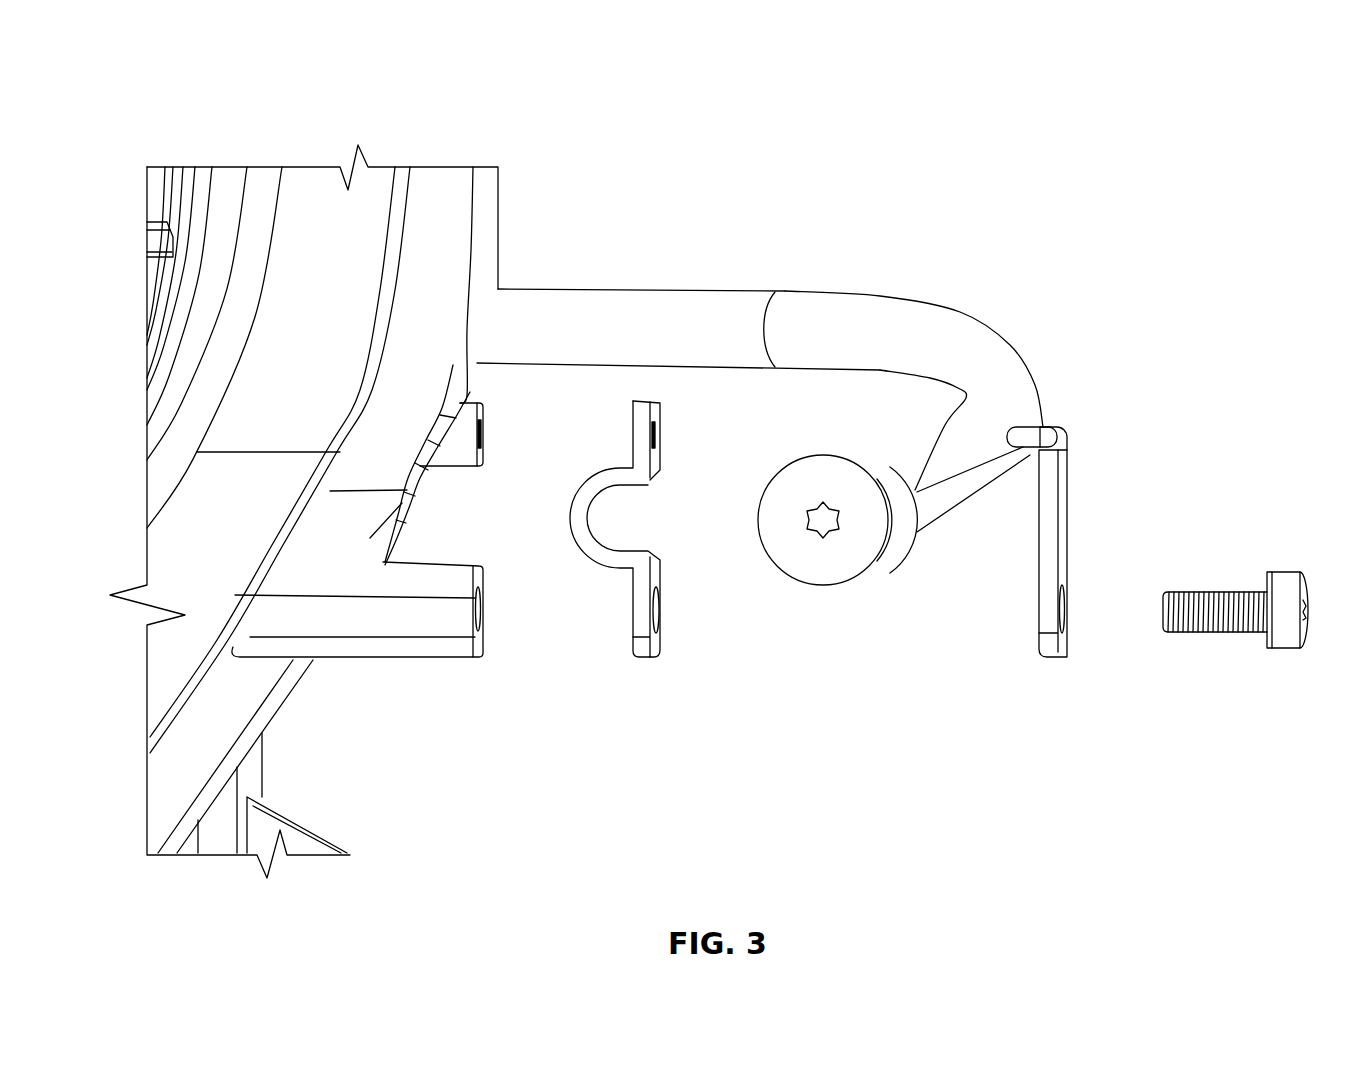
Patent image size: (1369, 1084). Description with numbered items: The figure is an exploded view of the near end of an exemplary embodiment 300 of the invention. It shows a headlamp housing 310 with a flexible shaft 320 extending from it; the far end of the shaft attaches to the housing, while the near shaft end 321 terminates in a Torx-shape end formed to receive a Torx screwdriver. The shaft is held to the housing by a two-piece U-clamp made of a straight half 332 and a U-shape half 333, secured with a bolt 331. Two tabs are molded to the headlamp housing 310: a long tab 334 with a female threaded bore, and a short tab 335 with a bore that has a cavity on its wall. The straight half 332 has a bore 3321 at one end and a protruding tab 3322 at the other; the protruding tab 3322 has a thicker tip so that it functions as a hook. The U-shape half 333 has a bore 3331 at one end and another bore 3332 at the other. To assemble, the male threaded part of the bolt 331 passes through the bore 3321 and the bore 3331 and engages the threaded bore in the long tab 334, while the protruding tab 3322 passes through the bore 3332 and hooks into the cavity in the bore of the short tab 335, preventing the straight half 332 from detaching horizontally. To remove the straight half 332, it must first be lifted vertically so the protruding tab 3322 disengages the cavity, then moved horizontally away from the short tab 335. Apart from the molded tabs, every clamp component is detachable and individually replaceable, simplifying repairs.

The exemplary embodiment 300 is at (518, 167).
The headlamp housing 310 is at (250, 315).
The flexible shaft 320 is at (662, 313).
The near shaft end 321 is at (825, 463).
The bolt 331 is at (1257, 662).
The straight half of U-clamp 332 is at (1063, 507).
The bore 3321 is at (1068, 618).
The protruding tab 3322 is at (1030, 433).
The U-shape half of U-clamp 333 is at (657, 657).
The bore 3331 is at (660, 600).
The bore 3332 is at (657, 430).
The long tab 334 is at (418, 614).
The short tab 335 is at (445, 457).